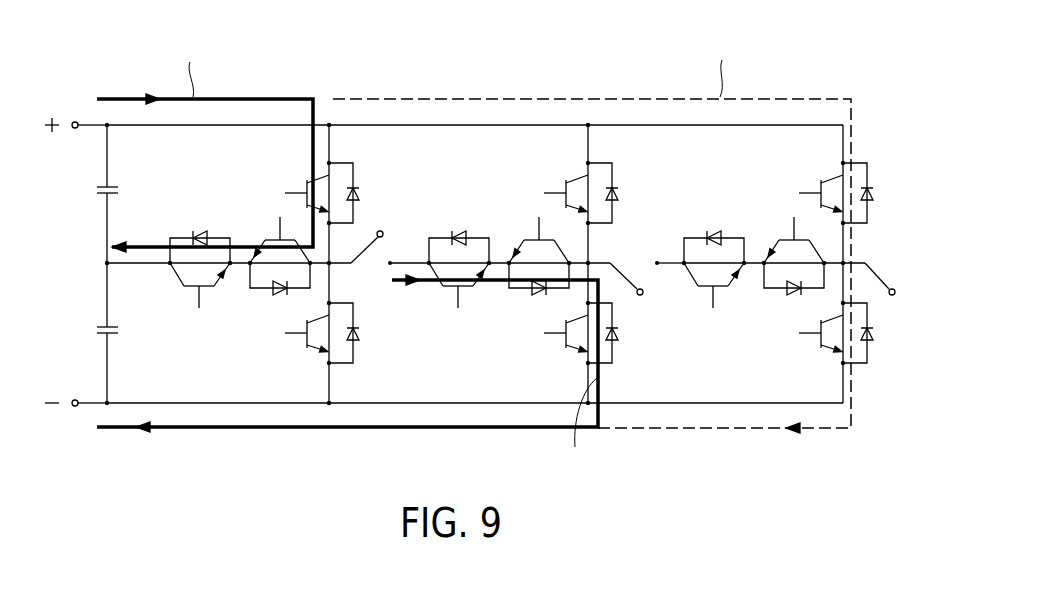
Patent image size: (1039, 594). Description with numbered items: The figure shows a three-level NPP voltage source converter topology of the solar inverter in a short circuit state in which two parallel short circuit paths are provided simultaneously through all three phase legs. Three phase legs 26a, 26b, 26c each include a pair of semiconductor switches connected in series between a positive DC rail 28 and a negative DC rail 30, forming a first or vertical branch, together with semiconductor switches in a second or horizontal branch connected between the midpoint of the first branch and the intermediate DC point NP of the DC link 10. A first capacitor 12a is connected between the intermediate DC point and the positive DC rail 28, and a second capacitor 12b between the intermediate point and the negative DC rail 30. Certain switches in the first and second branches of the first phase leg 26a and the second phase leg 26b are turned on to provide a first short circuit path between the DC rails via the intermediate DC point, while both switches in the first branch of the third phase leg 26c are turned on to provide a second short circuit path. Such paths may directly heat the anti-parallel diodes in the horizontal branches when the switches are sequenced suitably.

The DC link 10 is at (68, 104).
The first capacitor 12a is at (96, 190).
The second capacitor 12b is at (96, 330).
The first phase leg 26a is at (276, 194).
The second phase leg 26b is at (533, 194).
The third phase leg 26c is at (789, 194).
The positive DC rail 28 is at (653, 123).
The negative DC rail 30 is at (758, 406).